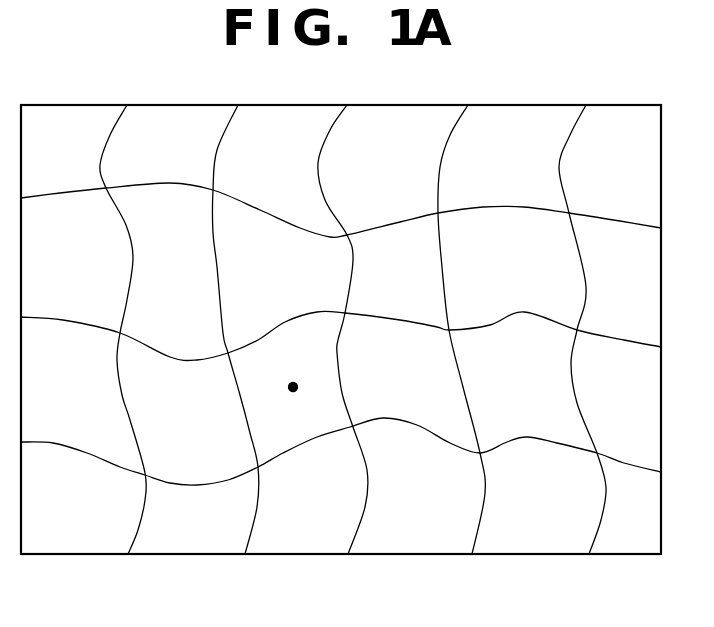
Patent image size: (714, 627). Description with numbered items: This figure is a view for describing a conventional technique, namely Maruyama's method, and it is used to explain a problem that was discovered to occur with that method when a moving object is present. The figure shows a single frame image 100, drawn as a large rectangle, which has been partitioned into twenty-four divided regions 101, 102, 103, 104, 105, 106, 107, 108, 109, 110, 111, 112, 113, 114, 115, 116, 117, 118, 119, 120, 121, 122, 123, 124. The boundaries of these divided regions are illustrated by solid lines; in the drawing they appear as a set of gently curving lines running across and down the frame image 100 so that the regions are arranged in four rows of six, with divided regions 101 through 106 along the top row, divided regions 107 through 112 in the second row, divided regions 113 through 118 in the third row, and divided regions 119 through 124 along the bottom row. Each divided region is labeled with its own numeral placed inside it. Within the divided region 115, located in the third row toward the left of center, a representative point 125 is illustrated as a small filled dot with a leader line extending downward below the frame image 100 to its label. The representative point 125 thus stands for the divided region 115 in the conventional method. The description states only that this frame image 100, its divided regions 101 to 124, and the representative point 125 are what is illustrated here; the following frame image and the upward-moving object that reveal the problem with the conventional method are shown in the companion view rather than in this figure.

The frame image 100 is at (58, 105).
The divided region 101 is at (65, 150).
The divided region 102 is at (162, 147).
The divided region 103 is at (277, 160).
The divided region 104 is at (390, 165).
The divided region 105 is at (507, 157).
The divided region 106 is at (618, 165).
The divided region 107 is at (74, 257).
The divided region 108 is at (171, 270).
The divided region 109 is at (282, 267).
The divided region 110 is at (396, 270).
The divided region 111 is at (511, 269).
The divided region 112 is at (620, 282).
The divided region 113 is at (71, 389).
The divided region 114 is at (180, 410).
The divided region 115 is at (292, 387).
The divided region 116 is at (407, 382).
The divided region 117 is at (530, 384).
The divided region 118 is at (625, 401).
The divided region 119 is at (81, 498).
The divided region 120 is at (197, 512).
The divided region 121 is at (307, 492).
The divided region 122 is at (420, 486).
The divided region 123 is at (540, 495).
The divided region 124 is at (630, 507).
The representative point 125 is at (297, 389).